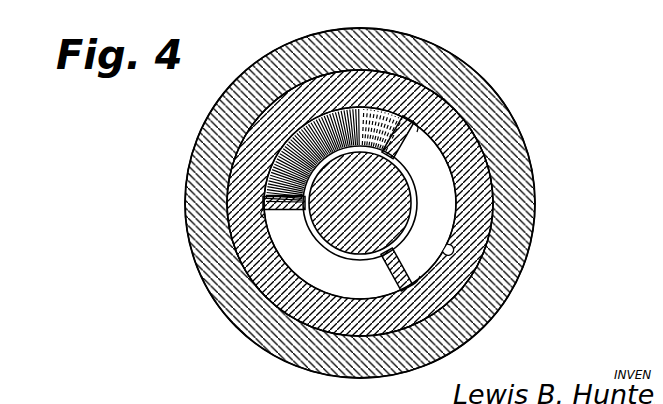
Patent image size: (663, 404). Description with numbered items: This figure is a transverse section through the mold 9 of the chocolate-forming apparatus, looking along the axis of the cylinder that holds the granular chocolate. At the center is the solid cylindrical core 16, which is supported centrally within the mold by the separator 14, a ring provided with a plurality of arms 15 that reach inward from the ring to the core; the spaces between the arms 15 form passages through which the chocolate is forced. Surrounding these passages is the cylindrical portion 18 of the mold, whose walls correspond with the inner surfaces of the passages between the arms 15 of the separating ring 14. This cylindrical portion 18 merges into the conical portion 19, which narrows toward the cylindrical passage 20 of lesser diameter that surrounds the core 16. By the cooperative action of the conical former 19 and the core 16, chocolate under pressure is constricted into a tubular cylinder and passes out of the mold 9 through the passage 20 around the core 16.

The mold 9 is at (512, 166).
The separator 14 is at (452, 127).
The arms 15 is at (395, 132).
The core 16 is at (388, 205).
The cylindrical portion 18 is at (440, 243).
The conical portion 19 is at (262, 146).
The cylindrical passage 20 is at (320, 237).